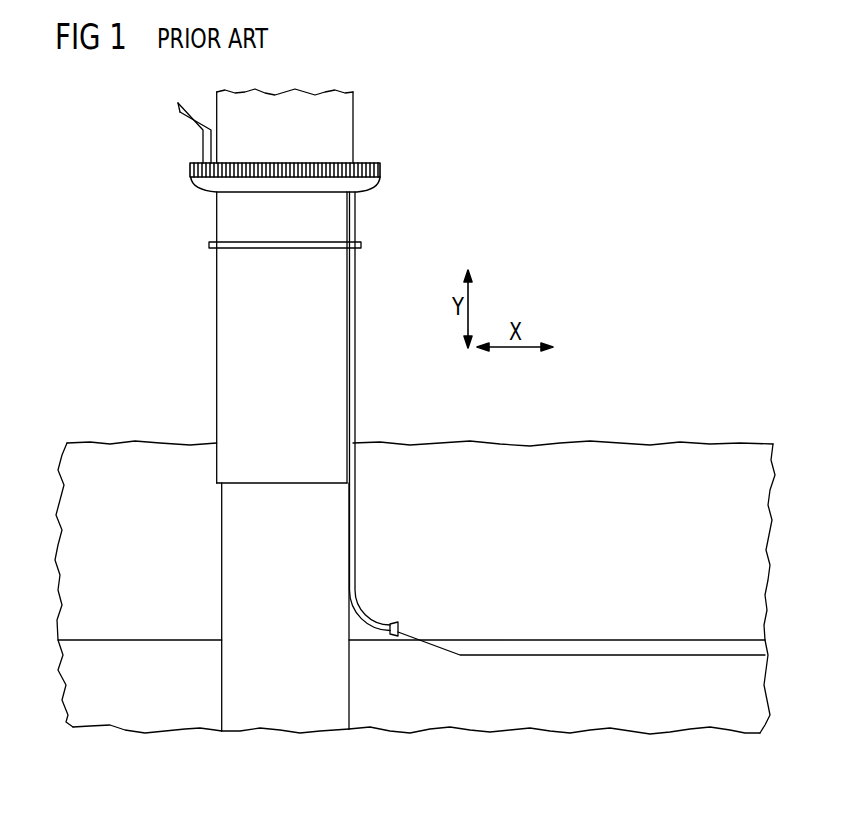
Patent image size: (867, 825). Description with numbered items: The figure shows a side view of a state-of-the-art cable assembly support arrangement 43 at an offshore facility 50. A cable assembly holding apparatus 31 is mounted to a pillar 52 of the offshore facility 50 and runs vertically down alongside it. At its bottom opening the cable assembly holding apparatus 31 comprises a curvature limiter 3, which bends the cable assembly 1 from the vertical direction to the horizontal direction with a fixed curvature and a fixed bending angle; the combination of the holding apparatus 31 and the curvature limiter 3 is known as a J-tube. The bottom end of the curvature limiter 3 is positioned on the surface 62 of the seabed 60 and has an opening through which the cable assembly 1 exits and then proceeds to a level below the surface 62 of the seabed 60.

The cable assembly 1 is at (577, 655).
The curvature limiter 3 is at (375, 628).
The cable assembly holding apparatus 31 is at (347, 358).
The cable assembly support arrangement 43 is at (424, 409).
The offshore facility 50 is at (158, 371).
The pillar 52 is at (225, 332).
The seabed 60 is at (125, 722).
The surface 62 is at (117, 640).